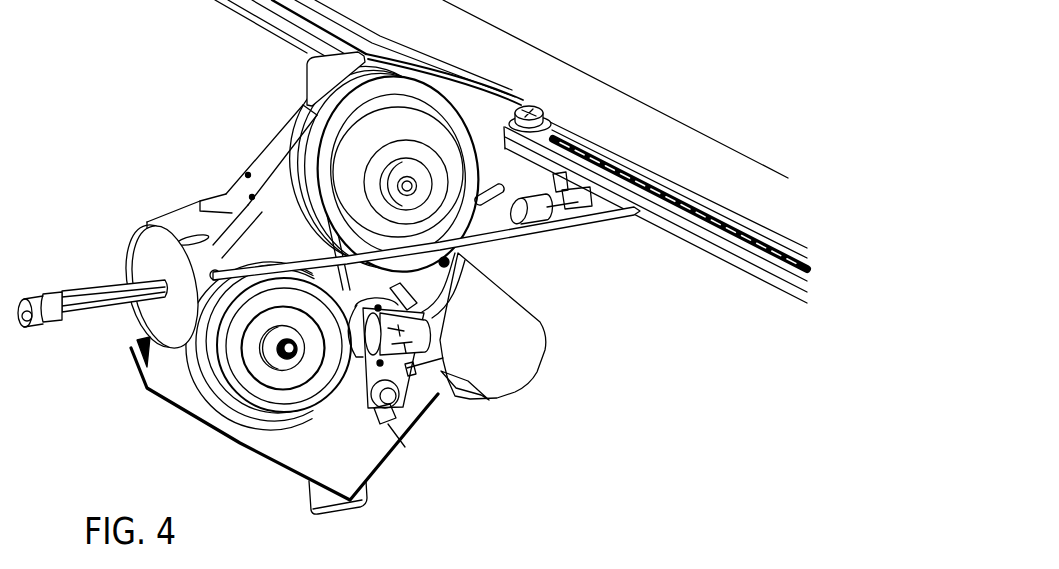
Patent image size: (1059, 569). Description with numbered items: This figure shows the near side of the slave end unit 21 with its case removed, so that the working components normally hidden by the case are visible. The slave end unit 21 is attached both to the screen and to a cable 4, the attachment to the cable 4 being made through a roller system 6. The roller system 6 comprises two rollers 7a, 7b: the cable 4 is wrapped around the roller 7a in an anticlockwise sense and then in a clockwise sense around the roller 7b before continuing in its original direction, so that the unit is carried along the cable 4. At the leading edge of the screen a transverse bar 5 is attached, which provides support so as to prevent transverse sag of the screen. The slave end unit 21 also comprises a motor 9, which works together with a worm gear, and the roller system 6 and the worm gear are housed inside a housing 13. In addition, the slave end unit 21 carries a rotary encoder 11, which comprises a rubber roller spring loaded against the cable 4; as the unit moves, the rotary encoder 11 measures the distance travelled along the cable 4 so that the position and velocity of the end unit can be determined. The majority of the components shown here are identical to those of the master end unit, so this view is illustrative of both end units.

The cable 4 is at (588, 218).
The transverse bar 5 is at (598, 107).
The roller system 6 is at (238, 430).
The roller 7a is at (227, 367).
The roller 7b is at (358, 158).
The motor 9 is at (518, 332).
The rotary encoder 11 is at (412, 348).
The housing 13 is at (233, 193).
The slave end unit 21 is at (206, 152).